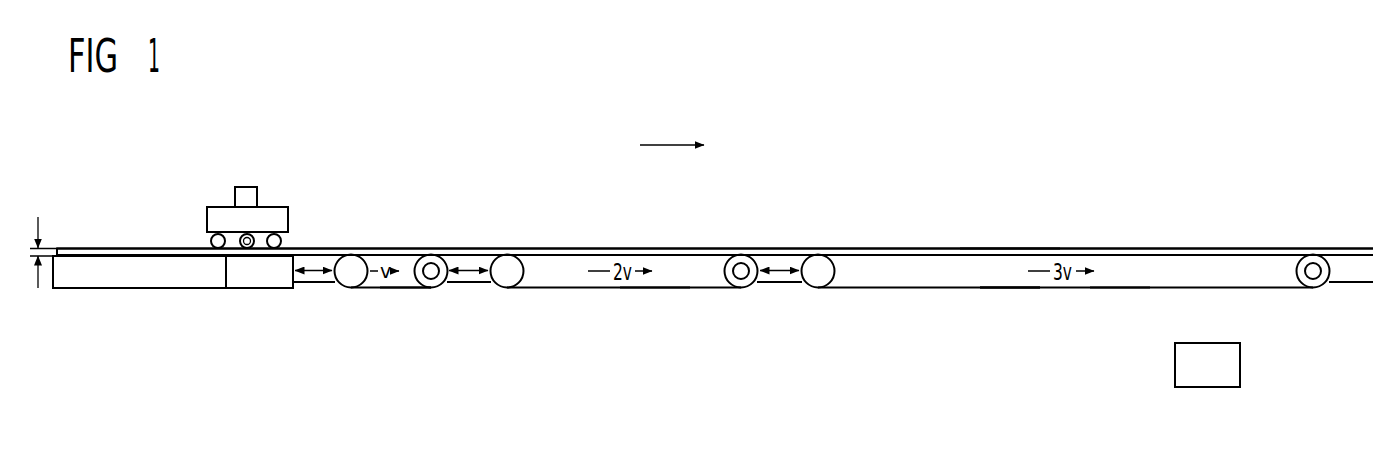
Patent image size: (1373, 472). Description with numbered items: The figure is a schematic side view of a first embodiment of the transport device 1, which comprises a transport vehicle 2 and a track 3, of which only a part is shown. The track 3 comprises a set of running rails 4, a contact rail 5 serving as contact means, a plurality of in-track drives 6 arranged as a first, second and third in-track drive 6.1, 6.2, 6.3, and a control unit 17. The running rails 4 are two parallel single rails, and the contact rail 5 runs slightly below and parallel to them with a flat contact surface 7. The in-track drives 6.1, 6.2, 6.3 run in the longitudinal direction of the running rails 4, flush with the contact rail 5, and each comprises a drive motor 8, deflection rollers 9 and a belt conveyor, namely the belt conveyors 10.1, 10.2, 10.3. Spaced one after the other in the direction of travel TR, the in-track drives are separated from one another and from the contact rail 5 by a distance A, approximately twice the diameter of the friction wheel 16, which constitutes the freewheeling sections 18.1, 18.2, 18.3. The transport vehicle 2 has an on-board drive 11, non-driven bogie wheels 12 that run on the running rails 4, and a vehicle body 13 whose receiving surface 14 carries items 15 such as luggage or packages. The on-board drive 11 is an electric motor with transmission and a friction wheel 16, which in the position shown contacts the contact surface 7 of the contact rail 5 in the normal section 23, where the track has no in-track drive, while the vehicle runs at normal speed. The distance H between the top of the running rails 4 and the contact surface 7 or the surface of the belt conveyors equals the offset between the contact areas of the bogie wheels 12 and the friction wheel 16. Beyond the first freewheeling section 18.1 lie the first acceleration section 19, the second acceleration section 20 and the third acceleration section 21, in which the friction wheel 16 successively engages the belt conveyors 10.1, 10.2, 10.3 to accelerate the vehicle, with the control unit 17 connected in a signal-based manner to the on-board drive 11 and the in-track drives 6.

The transport device 1 is at (1010, 175).
The transport vehicle 2 is at (208, 189).
The track 3 is at (1010, 357).
The running rails 4 is at (80, 248).
The contact rail 5 is at (93, 289).
The in-track drives 6 is at (1010, 318).
The first in-track drive 6.1 is at (367, 289).
The second in-track drive 6.2 is at (578, 289).
The third in-track drive 6.3 is at (920, 289).
The contact surface 7 is at (130, 250).
The drive motor 8 is at (420, 256).
The deflection rollers 9 is at (348, 255).
The belt conveyor of the first in-track drive 10.1 is at (370, 249).
The belt conveyor of the second in-track drive 10.2 is at (577, 249).
The belt conveyor of the third in-track drive 10.3 is at (893, 250).
The on-board drive 11 is at (246, 250).
The bogie wheels 12 is at (211, 241).
The vehicle body 13 is at (280, 207).
The receiving surface 14 is at (208, 205).
The items 15 is at (248, 187).
The friction wheel 16 is at (226, 284).
The control unit 17 is at (1240, 365).
The first freewheeling section 18.1 is at (313, 289).
The second freewheeling section 18.2 is at (467, 290).
The third freewheeling section 18.3 is at (780, 290).
The first acceleration section 19 is at (404, 320).
The second acceleration section 20 is at (652, 318).
The third acceleration section 21 is at (1122, 318).
The normal section 23 is at (153, 291).
The distance A is at (315, 267).
The distance H is at (34, 252).
The direction of travel TR is at (672, 130).